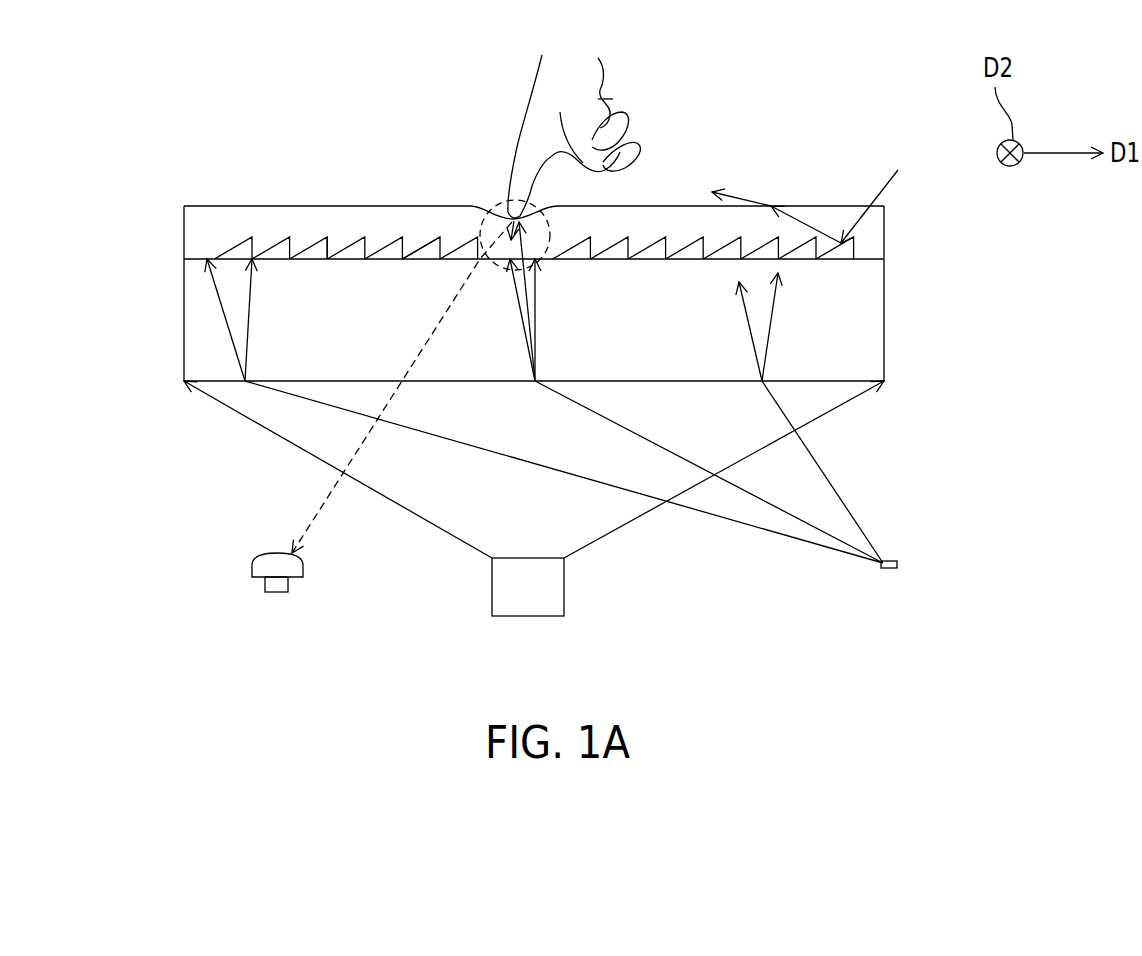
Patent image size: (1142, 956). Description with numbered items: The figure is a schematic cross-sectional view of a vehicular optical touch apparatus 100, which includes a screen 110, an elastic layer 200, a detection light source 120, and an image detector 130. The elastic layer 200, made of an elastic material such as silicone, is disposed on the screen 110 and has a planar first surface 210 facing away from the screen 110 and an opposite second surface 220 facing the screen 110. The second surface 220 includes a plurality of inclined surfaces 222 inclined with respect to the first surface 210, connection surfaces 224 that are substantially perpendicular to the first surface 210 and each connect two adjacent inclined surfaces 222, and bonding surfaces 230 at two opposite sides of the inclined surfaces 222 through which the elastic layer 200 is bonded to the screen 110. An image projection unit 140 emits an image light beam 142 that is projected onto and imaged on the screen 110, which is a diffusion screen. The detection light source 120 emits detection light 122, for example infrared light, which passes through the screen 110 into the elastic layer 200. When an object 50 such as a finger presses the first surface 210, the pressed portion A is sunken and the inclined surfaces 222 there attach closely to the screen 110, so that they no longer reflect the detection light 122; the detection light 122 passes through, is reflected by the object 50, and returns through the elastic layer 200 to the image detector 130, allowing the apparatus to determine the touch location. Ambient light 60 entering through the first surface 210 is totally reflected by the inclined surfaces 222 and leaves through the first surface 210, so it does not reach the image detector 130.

The vehicular optical touch apparatus 100 is at (1017, 660).
The screen 110 is at (860, 335).
The detection light source 120 is at (897, 565).
The detection light 122 is at (456, 300).
The image detector 130 is at (267, 558).
The image projection unit 140 is at (564, 587).
The image light beam 142 is at (637, 522).
The elastic layer 200 is at (873, 227).
The first surface 210 is at (673, 203).
The second surface 220 is at (275, 252).
The inclined surfaces 222 is at (418, 253).
The connection surfaces 224 is at (323, 245).
The bonding surfaces 230 is at (870, 260).
The object 50 is at (607, 97).
The ambient light 60 is at (861, 202).
The pressed portion A is at (552, 236).